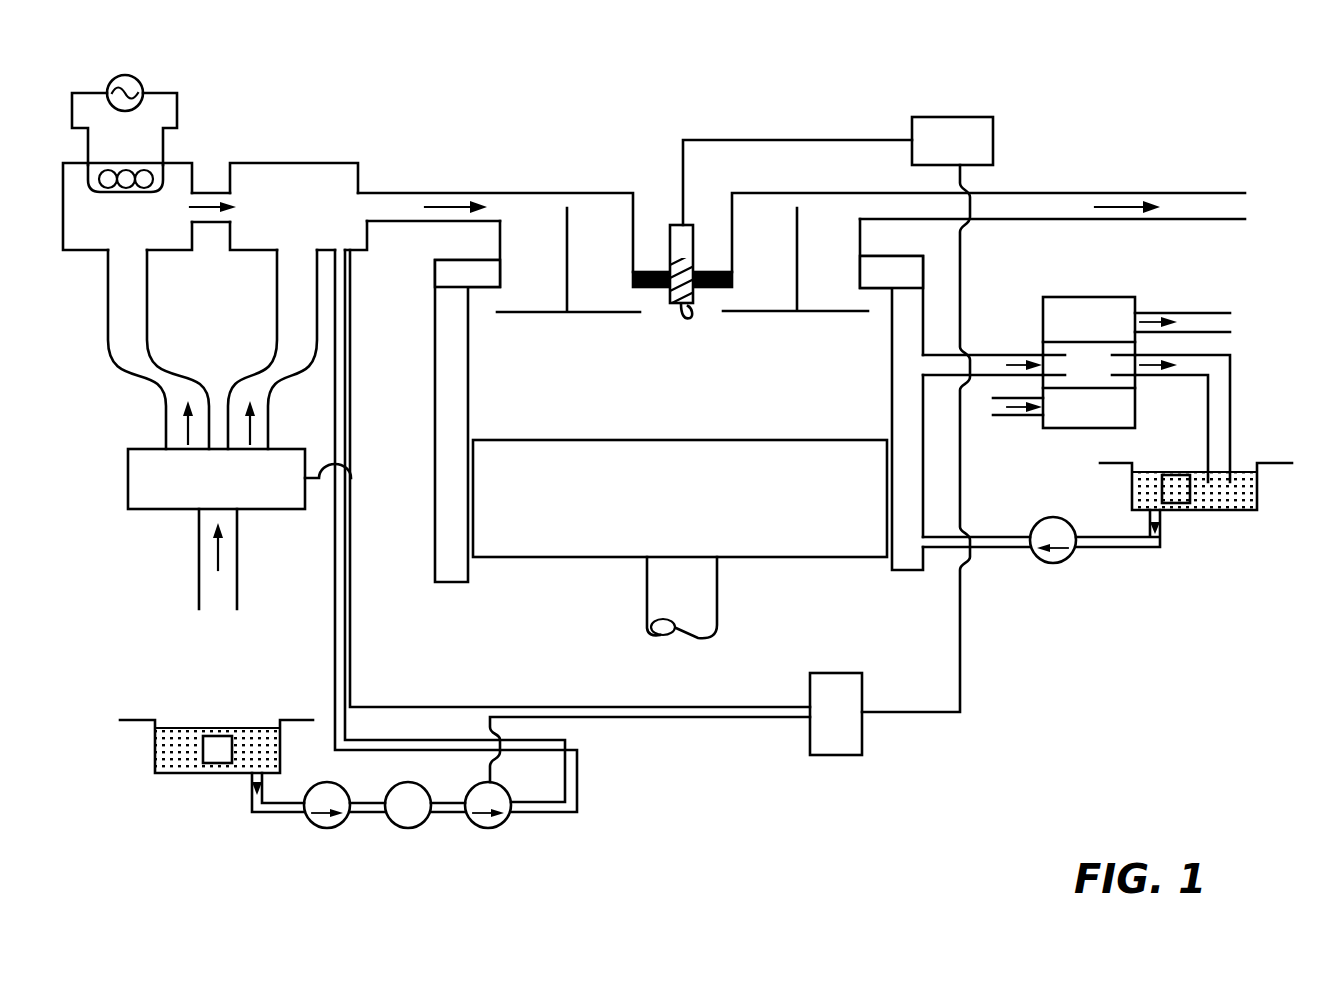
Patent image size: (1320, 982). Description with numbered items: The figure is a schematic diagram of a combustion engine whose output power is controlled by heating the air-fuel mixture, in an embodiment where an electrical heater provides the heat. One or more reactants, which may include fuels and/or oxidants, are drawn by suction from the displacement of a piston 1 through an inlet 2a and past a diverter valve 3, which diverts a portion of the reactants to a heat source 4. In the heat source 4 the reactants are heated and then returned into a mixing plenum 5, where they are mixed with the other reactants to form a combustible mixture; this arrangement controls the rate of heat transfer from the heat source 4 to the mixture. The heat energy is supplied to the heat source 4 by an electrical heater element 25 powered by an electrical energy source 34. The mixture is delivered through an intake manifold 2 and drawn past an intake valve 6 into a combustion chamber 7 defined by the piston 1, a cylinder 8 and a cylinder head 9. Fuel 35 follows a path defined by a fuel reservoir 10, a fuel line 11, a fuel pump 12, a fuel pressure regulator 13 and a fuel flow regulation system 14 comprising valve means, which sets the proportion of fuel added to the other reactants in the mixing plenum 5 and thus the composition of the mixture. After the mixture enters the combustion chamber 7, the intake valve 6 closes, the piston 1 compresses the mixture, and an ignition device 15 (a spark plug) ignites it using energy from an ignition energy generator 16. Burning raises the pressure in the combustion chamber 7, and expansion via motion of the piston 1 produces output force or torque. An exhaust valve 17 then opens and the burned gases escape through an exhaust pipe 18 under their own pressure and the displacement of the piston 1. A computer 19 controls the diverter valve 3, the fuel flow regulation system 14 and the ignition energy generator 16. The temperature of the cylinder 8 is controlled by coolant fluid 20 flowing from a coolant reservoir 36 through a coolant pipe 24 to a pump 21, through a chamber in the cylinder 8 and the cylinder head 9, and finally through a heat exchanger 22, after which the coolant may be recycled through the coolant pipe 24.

The piston 1 is at (680, 539).
The intake manifold 2 is at (495, 232).
The inlet 2a is at (223, 576).
The diverter valve 3 is at (123, 480).
The heat source 4 is at (146, 206).
The mixing plenum 5 is at (278, 206).
The intake valve 6 is at (597, 317).
The combustion chamber 7 is at (682, 385).
The cylinder 8 is at (473, 413).
The cylinder head 9 is at (430, 277).
The fuel reservoir 10 is at (155, 766).
The fuel line 11 is at (353, 385).
The fuel pump 12 is at (307, 827).
The fuel pressure regulator 13 is at (388, 828).
The fuel flow regulation system 14 is at (465, 823).
The ignition device 15 is at (663, 238).
The ignition energy generator 16 is at (927, 414).
The exhaust valve 17 is at (768, 318).
The exhaust pipe 18 is at (988, 232).
The computer 19 is at (836, 714).
The coolant fluid 20 is at (812, 379).
The pump 21 is at (1068, 567).
The heat exchanger 22 is at (1067, 428).
The coolant pipe 24 is at (985, 350).
The electrical heater element 25 is at (90, 196).
The electrical energy source 34 is at (145, 78).
The fuel 35 is at (217, 749).
The coolant reservoir 36 is at (1207, 515).